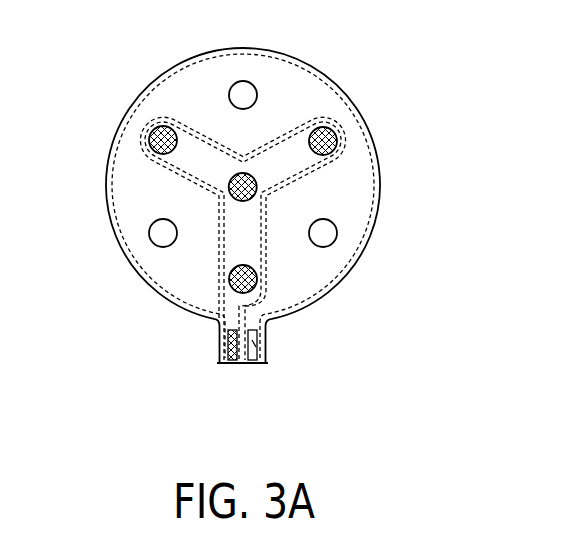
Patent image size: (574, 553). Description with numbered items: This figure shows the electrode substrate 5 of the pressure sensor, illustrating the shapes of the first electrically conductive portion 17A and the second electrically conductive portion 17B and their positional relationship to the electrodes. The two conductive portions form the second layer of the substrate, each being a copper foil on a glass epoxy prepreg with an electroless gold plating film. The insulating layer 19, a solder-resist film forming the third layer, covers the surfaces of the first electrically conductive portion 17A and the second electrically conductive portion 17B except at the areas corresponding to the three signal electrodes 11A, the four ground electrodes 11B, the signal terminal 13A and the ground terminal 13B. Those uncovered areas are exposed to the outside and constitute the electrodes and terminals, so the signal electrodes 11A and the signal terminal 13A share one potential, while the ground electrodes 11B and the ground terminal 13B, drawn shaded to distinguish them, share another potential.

The electrode substrate 5 is at (300, 49).
The signal electrode 11A is at (243, 93).
The ground electrode 11B is at (337, 137).
The signal terminal 13A is at (266, 365).
The ground terminal 13B is at (219, 365).
The first electrically conductive portion 17A is at (157, 279).
The second electrically conductive portion 17B is at (218, 326).
The insulating layer 19 is at (162, 98).